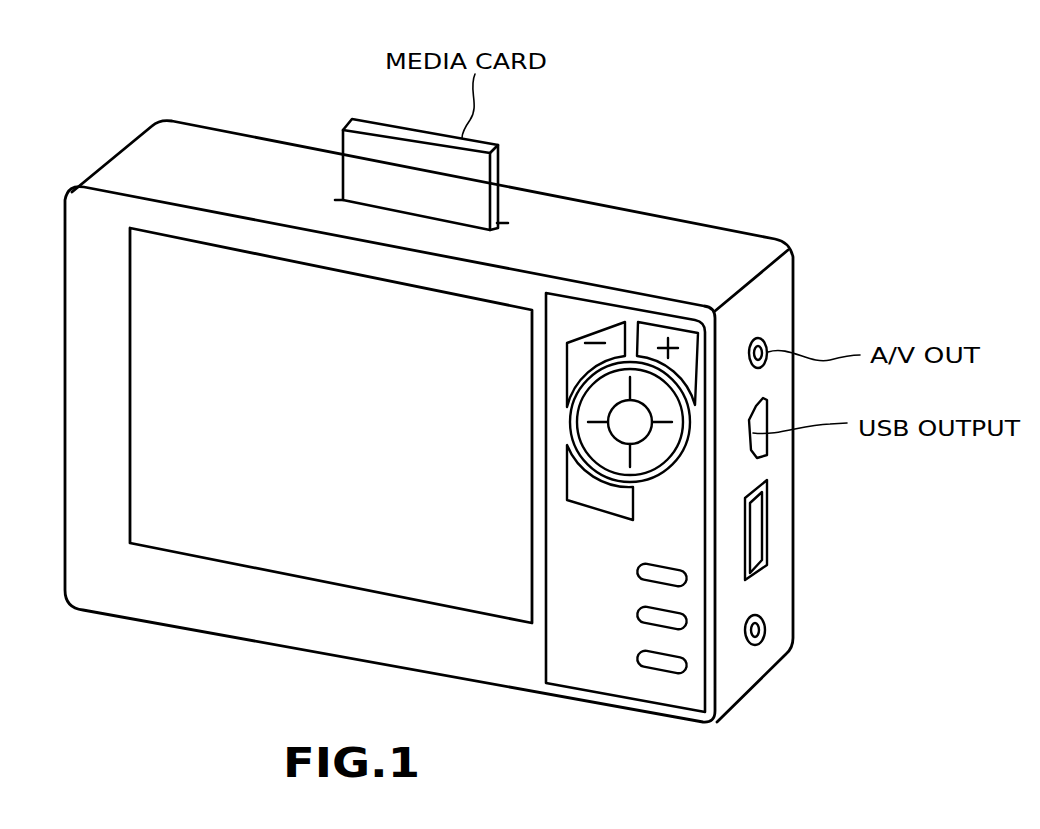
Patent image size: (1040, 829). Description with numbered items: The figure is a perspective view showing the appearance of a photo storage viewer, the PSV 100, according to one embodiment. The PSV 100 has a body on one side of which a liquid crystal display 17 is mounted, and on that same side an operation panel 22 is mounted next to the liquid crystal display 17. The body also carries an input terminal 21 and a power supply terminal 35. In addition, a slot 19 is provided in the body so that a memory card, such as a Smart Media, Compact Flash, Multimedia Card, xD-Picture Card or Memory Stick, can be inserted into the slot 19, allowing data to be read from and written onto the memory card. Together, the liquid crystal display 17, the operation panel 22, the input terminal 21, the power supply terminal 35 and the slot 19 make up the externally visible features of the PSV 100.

The photo storage viewer 100 is at (200, 126).
The slot 19 is at (366, 200).
The liquid crystal display 17 is at (260, 555).
The operation panel 22 is at (590, 678).
The input terminal 21 is at (760, 535).
The power supply terminal 35 is at (762, 629).